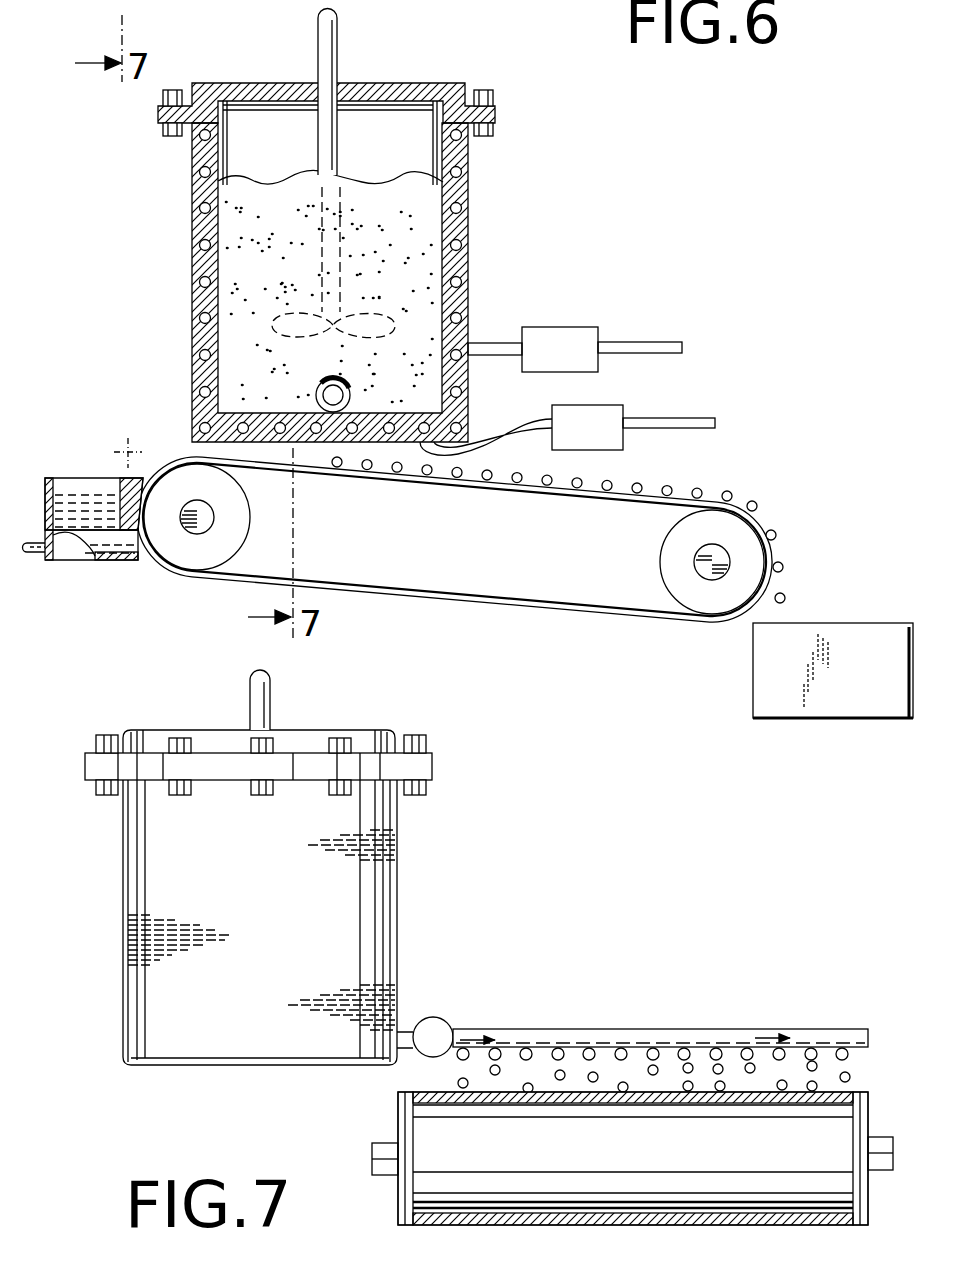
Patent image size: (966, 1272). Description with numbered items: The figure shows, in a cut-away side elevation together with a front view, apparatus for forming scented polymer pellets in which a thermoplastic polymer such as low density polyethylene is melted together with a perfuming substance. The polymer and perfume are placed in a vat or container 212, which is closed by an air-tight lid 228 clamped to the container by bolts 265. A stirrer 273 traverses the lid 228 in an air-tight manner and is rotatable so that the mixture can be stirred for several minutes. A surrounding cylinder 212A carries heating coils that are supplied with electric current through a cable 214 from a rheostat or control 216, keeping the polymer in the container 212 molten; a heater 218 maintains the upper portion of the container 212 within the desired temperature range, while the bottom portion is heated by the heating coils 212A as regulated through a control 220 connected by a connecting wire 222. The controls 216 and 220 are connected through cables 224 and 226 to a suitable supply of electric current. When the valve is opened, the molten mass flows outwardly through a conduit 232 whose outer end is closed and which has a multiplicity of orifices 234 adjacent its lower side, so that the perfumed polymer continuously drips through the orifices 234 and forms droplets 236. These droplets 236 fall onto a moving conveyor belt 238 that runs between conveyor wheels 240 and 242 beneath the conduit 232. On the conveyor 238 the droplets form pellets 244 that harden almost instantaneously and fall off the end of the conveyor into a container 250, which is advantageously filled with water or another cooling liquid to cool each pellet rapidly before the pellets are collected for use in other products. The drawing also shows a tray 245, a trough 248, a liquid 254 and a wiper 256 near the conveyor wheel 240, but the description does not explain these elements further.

In FIG. 6, the container 212 is at (182, 296).
In FIG. 7, the container 212 is at (112, 960).
In FIG. 6, the surrounding cylinder having heating coils 212A is at (468, 238).
In FIG. 6, the cable 214 is at (492, 343).
In FIG. 6, the rheostat or control 216 is at (557, 337).
In FIG. 6, the heater 218 is at (347, 392).
In FIG. 6, the control 220 is at (620, 440).
In FIG. 6, the connecting wire 222 is at (492, 448).
In FIG. 6, the cable 224 is at (640, 342).
In FIG. 6, the cable 226 is at (672, 418).
In FIG. 6, the lid 228 is at (388, 83).
In FIG. 7, the lid 228 is at (200, 738).
In FIG. 7, the conduit 232 is at (670, 1029).
In FIG. 7, the orifices 234 is at (527, 1046).
In FIG. 7, the droplets 236 is at (566, 1070).
In FIG. 6, the conveyor belt 238 is at (212, 584).
In FIG. 7, the conveyor belt 238 is at (400, 1093).
In FIG. 6, the conveyor wheel 240 is at (236, 520).
In FIG. 6, the conveyor wheel 242 is at (672, 558).
In FIG. 7, the conveyor wheel 242 is at (670, 1153).
In FIG. 6, the pellets 244 is at (772, 530).
In FIG. 6, the collecting tray 245 is at (780, 695).
In FIG. 6, the trough 248 is at (48, 480).
In FIG. 6, the container 250 is at (52, 560).
In FIG. 6, the liquid 254 is at (106, 562).
In FIG. 6, the wiper 256 is at (125, 478).
In FIG. 6, the bolts 265 is at (488, 90).
In FIG. 7, the bolts 265 is at (100, 737).
In FIG. 6, the stirrer 273 is at (318, 18).
In FIG. 7, the stirrer 273 is at (270, 712).